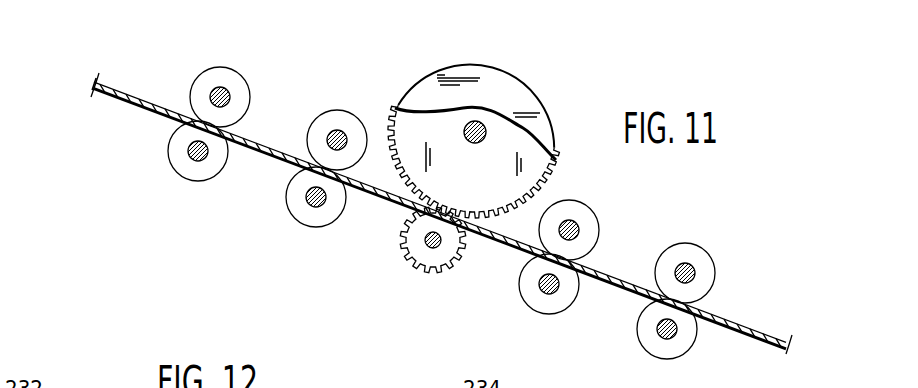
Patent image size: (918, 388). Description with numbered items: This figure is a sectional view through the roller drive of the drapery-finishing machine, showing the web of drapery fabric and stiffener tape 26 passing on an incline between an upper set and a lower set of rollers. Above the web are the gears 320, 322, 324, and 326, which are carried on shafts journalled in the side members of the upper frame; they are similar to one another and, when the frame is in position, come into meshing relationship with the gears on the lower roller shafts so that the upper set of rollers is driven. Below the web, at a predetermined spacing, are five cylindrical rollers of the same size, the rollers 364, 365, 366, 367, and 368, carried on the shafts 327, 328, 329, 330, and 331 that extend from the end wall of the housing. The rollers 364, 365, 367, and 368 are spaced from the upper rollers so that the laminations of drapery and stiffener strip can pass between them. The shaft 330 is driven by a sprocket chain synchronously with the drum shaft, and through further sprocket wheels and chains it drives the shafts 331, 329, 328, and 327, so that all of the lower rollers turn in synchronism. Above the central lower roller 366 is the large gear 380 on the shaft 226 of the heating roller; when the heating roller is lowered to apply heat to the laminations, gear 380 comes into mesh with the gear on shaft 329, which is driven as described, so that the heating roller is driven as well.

The web / belt 26 is at (125, 101).
The gear 320 is at (231, 78).
The gear 322 is at (332, 122).
The gear 324 is at (578, 210).
The gear 326 is at (690, 256).
The shaft 327 is at (189, 153).
The shaft 328 is at (306, 200).
The shaft 329 is at (425, 243).
The shaft 330 is at (540, 288).
The shaft 331 is at (657, 331).
The roller 364 is at (207, 178).
The roller 365 is at (323, 222).
The roller 366 is at (436, 258).
The roller 367 is at (558, 305).
The roller 368 is at (669, 350).
The gear 380 is at (525, 82).
The shaft 226 is at (476, 144).